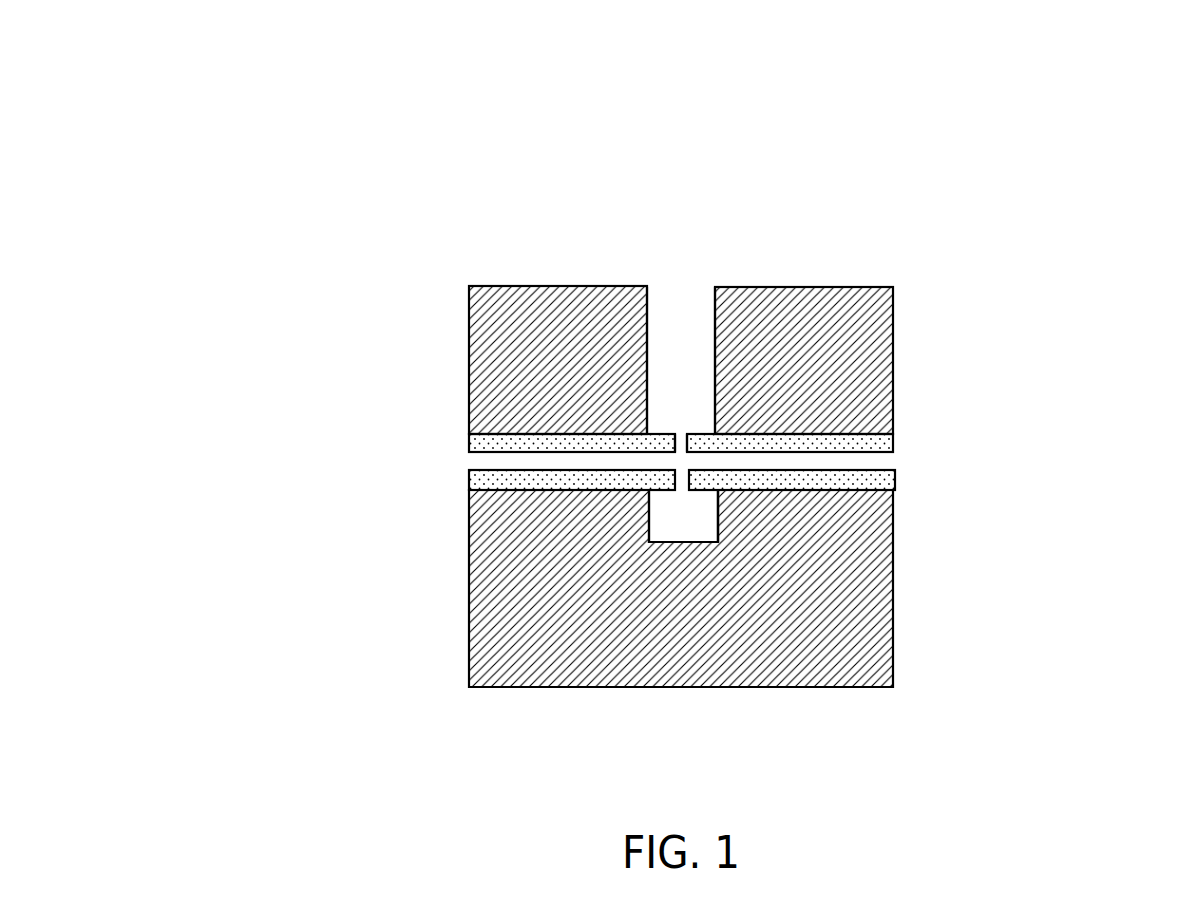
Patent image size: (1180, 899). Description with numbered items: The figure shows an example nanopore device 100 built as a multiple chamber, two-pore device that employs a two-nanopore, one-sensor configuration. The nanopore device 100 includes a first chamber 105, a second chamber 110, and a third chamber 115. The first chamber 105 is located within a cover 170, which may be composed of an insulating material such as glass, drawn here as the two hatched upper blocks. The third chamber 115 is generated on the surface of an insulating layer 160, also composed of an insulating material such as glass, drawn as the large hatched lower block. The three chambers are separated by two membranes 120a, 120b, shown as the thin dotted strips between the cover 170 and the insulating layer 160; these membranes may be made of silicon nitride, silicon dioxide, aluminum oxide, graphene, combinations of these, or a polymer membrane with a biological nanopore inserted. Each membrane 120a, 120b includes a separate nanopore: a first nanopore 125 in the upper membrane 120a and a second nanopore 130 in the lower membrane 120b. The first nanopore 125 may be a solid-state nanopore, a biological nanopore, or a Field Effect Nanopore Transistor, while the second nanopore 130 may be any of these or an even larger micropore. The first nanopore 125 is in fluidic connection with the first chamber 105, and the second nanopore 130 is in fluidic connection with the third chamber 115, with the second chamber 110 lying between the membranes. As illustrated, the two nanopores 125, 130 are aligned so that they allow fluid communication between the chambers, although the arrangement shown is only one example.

The nanopore device 100 is at (80, 37).
The first chamber 105 is at (682, 357).
The second chamber 110 is at (572, 462).
The third chamber 115 is at (705, 518).
The membrane 120a is at (881, 445).
The membrane 120b is at (880, 480).
The first nanopore 125 is at (682, 445).
The second nanopore 130 is at (679, 478).
The insulating layer 160 is at (872, 645).
The cover 170 is at (825, 322).